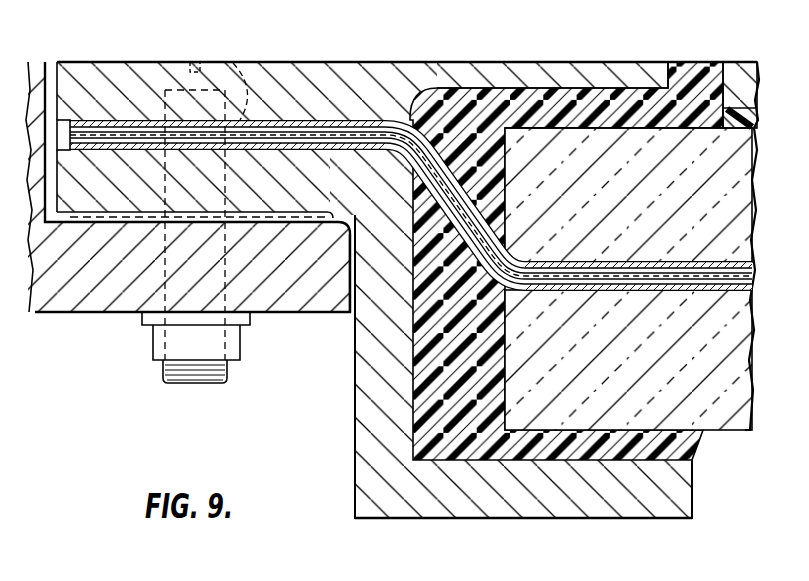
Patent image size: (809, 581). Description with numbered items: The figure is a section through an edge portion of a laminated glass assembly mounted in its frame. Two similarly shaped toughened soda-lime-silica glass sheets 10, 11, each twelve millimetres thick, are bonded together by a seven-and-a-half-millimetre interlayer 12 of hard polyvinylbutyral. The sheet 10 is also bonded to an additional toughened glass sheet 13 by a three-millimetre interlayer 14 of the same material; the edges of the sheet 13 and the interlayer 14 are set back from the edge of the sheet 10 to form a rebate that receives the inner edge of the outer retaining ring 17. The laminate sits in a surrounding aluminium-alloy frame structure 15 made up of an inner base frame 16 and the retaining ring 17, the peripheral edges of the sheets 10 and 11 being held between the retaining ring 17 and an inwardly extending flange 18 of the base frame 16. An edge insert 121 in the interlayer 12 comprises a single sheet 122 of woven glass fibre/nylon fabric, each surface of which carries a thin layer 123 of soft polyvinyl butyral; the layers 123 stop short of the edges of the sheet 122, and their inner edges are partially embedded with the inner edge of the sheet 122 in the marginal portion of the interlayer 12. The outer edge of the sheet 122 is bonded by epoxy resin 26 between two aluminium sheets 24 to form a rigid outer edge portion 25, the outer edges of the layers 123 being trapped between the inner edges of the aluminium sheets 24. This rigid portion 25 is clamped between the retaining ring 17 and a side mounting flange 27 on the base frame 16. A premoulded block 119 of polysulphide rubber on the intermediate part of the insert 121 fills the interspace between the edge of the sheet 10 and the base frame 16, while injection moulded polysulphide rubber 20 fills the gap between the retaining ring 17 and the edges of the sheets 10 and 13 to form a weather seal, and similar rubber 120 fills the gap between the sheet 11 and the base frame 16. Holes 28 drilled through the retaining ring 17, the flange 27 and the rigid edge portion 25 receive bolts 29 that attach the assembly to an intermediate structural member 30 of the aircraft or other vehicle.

The glass sheet 10 is at (648, 146).
The glass sheet 11 is at (716, 392).
The interlayer 12 is at (730, 292).
The additional glass sheet 13 is at (733, 72).
The interlayer 14 is at (750, 110).
The frame structure 15 is at (378, 405).
The inner base frame 16 is at (368, 378).
The outer retaining ring 17 is at (545, 70).
The inwardly extending flange 18 is at (620, 490).
The injection moulded polysulphide rubber 20 is at (580, 98).
The aluminium sheets 24 is at (136, 143).
The rigid outer edge portion 25 is at (97, 130).
The epoxy resin 26 is at (188, 140).
The side mounting flange 27 is at (115, 200).
The holes 28 is at (249, 120).
The bolts 29 is at (198, 365).
The intermediate structural member 30 is at (91, 318).
The block of polysulphide rubber 119 is at (493, 148).
The injection moulded polysulphide rubber 120 is at (420, 433).
The edge insert 121 is at (352, 126).
The sheet of woven glass fiber/nylon fabric 122 is at (404, 159).
The layer of soft polyvinyl butyral 123 is at (498, 228).